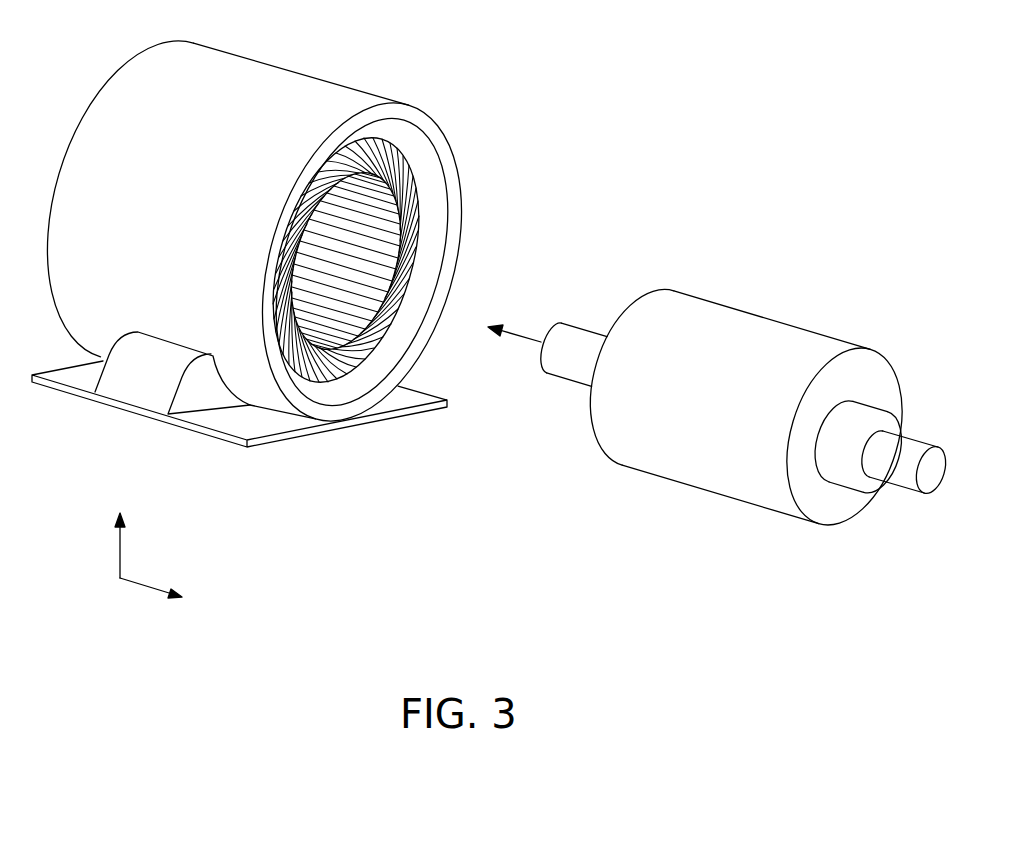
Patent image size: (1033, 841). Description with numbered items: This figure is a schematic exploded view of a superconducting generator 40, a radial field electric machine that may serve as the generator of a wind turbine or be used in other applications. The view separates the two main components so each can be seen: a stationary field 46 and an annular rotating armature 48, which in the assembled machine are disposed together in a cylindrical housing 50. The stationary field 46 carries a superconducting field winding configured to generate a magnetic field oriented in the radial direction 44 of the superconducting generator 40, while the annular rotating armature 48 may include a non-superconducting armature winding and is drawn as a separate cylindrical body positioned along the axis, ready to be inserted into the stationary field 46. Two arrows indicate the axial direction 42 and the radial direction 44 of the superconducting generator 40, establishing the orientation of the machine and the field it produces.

The superconducting generator 40 is at (744, 80).
The axial direction 42 is at (140, 588).
The radial direction 44 is at (120, 548).
The stationary field 46 is at (437, 217).
The annular rotating armature 48 is at (773, 318).
The cylindrical housing 50 is at (298, 71).